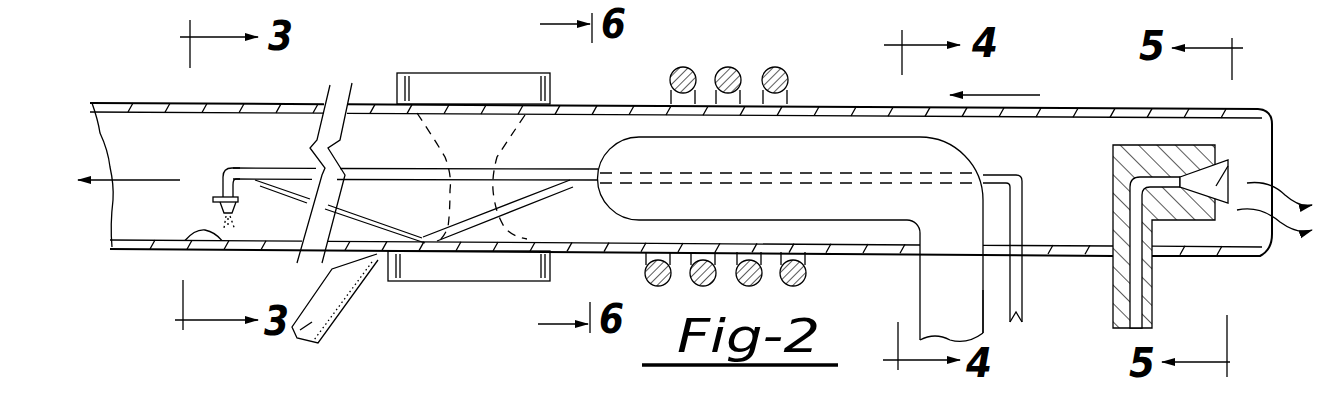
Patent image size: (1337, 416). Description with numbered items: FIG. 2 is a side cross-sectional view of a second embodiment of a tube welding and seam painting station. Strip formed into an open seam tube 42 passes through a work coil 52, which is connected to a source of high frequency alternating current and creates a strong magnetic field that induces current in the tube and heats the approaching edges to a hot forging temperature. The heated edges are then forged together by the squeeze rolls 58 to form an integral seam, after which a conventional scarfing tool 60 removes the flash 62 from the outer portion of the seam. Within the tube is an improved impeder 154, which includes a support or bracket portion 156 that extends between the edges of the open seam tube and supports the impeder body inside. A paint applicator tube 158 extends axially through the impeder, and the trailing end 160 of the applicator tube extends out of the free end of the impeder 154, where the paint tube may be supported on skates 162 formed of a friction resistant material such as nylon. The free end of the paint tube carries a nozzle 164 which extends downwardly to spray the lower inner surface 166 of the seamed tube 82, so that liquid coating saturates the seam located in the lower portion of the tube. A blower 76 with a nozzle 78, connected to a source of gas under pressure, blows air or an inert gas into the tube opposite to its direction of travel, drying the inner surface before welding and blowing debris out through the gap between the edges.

The open seam tube 42 is at (1125, 78).
The work coil 52 is at (773, 76).
The squeeze rolls 58 is at (510, 267).
The scarfing tool 60 is at (297, 263).
The flash 62 is at (357, 297).
The blower 76 is at (1147, 287).
The nozzle 78 is at (1220, 183).
The seamed tube 82 is at (123, 103).
The impeder 154 is at (873, 198).
The support or bracket portion 156 is at (957, 303).
The paint applicator tube 158 is at (993, 178).
The trailing end of the applicator tube 160 is at (523, 197).
The skates 162 is at (423, 237).
The nozzle 164 is at (220, 209).
The lower inner surface 166 is at (187, 242).